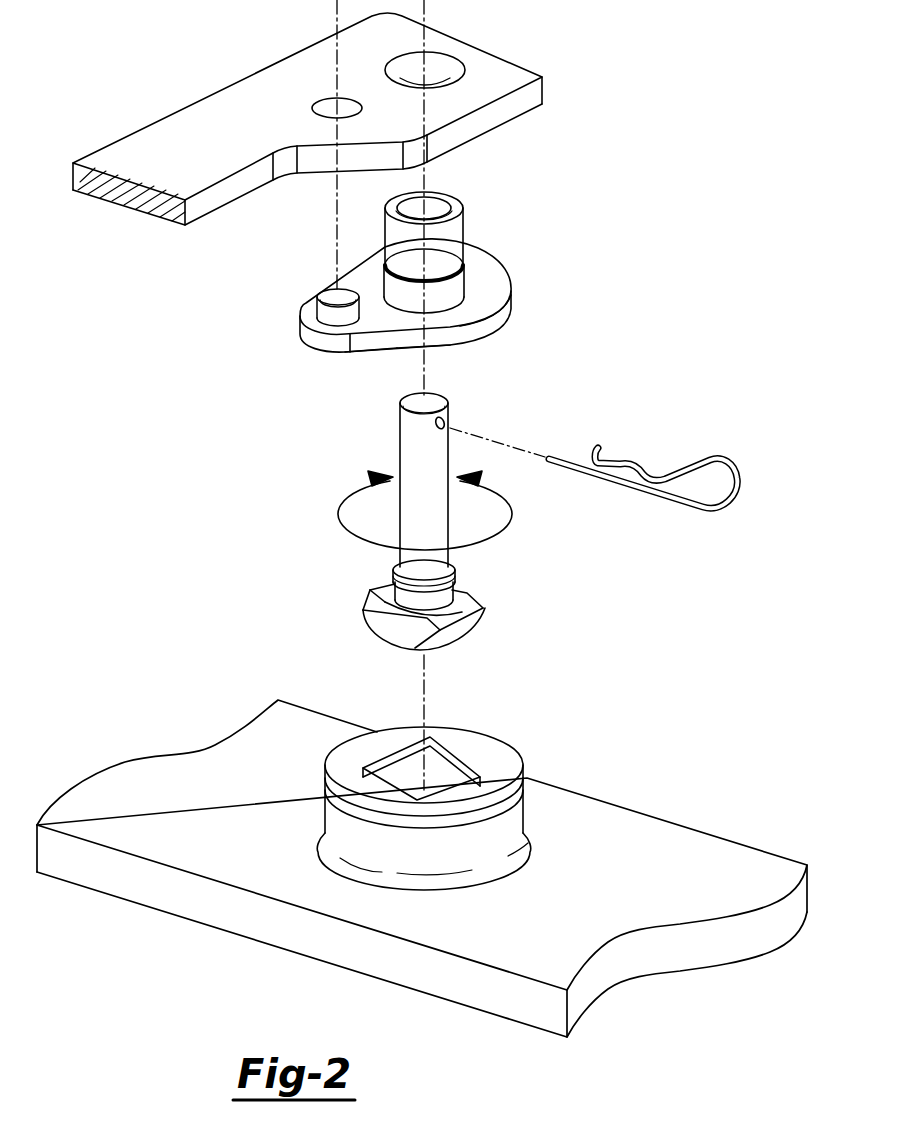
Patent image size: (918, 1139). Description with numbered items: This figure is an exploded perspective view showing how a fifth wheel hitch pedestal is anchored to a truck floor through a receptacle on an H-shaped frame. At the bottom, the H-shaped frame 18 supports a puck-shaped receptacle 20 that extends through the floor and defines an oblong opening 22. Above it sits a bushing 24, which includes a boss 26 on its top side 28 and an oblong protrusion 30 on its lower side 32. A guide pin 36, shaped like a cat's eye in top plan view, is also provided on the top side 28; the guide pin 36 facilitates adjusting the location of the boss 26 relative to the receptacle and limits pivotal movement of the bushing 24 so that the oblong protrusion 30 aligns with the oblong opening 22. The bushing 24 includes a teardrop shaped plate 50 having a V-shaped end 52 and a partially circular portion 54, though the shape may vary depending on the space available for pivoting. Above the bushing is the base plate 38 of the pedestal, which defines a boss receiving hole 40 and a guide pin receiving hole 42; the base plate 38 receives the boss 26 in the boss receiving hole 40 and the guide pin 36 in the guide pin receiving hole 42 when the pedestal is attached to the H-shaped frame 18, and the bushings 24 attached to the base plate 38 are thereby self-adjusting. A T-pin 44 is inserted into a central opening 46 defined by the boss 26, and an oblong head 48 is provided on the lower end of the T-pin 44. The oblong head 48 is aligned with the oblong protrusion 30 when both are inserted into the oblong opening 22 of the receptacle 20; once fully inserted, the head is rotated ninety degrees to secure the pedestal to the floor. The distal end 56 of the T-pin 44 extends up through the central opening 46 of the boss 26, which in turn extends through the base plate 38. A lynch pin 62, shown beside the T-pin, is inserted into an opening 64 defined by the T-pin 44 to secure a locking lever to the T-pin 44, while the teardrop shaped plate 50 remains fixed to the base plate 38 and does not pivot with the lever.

The H-shaped frame 18 is at (642, 843).
The receptacle 20 is at (480, 748).
The oblong opening 22 is at (442, 770).
The bushing 24 is at (514, 251).
The boss 26 is at (427, 282).
The top side 28 is at (497, 277).
The oblong protrusion 30 is at (397, 353).
The lower side 32 is at (490, 330).
The guide pin 36 is at (330, 293).
The base plate 38 is at (513, 80).
The boss receiving hole 40 is at (443, 68).
The guide pin receiving hole 42 is at (323, 108).
The T-pin 44 is at (408, 468).
The central opening 46 is at (431, 203).
The oblong head 48 is at (388, 625).
The teardrop shaped plate 50 is at (503, 305).
The V-shaped end 52 is at (368, 343).
The partially circular portion 54 is at (477, 263).
The distal end 56 is at (443, 396).
The lynch pin 62 is at (737, 463).
The opening 64 is at (441, 430).